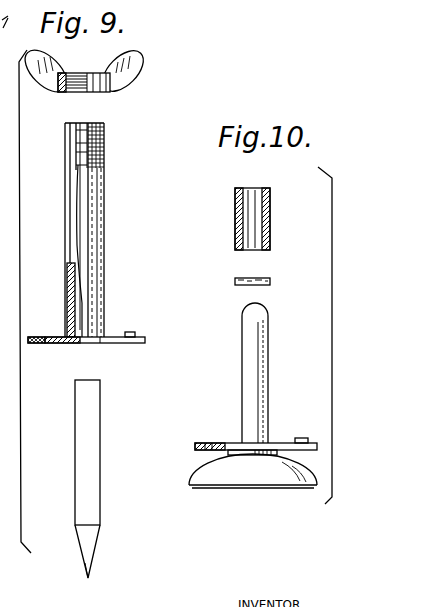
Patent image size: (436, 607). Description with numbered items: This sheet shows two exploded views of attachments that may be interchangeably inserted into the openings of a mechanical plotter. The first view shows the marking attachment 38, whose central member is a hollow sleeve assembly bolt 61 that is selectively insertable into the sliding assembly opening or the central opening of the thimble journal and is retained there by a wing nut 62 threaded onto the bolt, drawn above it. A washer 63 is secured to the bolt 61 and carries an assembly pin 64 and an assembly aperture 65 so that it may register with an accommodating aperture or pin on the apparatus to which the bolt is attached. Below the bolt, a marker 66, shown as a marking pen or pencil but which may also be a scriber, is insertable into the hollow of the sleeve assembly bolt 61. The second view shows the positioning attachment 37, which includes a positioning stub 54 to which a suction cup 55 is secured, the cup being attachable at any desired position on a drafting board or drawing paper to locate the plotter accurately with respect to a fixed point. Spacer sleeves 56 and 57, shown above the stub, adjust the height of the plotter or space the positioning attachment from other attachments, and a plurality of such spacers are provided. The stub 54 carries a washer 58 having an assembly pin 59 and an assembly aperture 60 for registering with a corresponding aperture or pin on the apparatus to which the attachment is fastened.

In FIG. 9, the wing nut 62 is at (139, 62).
In FIG. 9, the marking attachment 38 is at (119, 195).
In FIG. 9, the sleeve assembly bolt 61 is at (98, 288).
In FIG. 9, the washer 63 is at (110, 341).
In FIG. 9, the assembly pin 64 is at (133, 331).
In FIG. 9, the assembly aperture 65 is at (43, 336).
In FIG. 9, the marker 66 is at (93, 432).
In FIG. 10, the spacer sleeve 56 is at (262, 208).
In FIG. 10, the positioning attachment 37 is at (297, 258).
In FIG. 10, the spacer sleeve 57 is at (262, 282).
In FIG. 10, the positioning stub 54 is at (258, 360).
In FIG. 10, the washer 58 is at (198, 450).
In FIG. 10, the assembly aperture 60 is at (212, 443).
In FIG. 10, the assembly pin 59 is at (307, 437).
In FIG. 10, the suction cup 55 is at (252, 478).